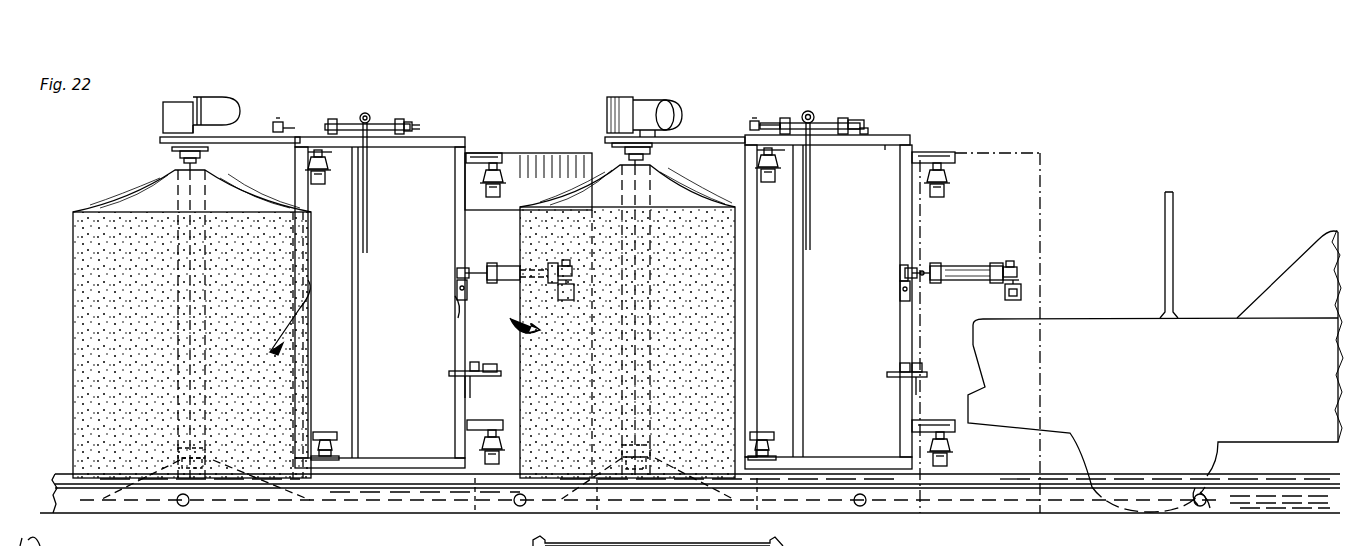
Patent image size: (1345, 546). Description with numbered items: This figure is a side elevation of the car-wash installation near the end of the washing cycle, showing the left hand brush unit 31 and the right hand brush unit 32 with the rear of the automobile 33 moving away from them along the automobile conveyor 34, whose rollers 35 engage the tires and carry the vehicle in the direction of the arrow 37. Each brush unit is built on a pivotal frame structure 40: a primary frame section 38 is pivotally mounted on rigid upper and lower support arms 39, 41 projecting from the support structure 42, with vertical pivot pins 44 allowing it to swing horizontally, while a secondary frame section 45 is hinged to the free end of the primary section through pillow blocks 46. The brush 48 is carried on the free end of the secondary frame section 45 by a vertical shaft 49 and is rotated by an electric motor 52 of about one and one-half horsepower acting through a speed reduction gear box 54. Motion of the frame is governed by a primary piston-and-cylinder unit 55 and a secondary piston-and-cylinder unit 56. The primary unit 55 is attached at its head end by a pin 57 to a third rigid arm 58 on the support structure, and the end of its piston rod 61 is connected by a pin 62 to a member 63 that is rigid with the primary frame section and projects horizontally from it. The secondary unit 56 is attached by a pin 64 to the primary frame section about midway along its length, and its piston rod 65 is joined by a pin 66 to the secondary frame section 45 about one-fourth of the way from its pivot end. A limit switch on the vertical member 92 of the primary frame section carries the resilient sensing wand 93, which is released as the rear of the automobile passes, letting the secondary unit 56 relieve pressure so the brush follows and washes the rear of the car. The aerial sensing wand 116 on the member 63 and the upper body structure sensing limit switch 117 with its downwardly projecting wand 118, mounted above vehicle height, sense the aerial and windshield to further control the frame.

The left hand brush unit 31 is at (799, 90).
The right hand brush unit 32 is at (192, 317).
The automobile 33 is at (1225, 365).
The automobile conveyor 34 is at (1290, 505).
The rollers 35 is at (1208, 508).
The arrow 37 is at (1245, 382).
The primary frame section 38 is at (855, 146).
The upper support arm 39 is at (952, 193).
The pivotal frame structure 40 is at (441, 120).
The lower support arm 41 is at (984, 455).
The support structure 42 is at (1040, 235).
The vertical pivot pins 44 is at (735, 293).
The secondary frame section 45 is at (696, 147).
The pillow blocks 46 is at (82, 212).
The brush 48 is at (545, 210).
The vertical shaft 49 is at (200, 160).
The electric motor 52 is at (222, 105).
The speed reduction gear box 54 is at (622, 100).
The primary piston-and-cylinder unit 55 is at (500, 264).
The secondary piston-and-cylinder unit 56 is at (352, 122).
The pin 57 is at (1020, 270).
The third rigid arm 58 is at (1022, 293).
The piston rod 61 is at (933, 263).
The pin 62 is at (900, 268).
The member 63 is at (457, 302).
The pin 64 is at (863, 128).
The piston rod 65 is at (766, 122).
The pin 66 is at (753, 122).
The vertical member 92 is at (902, 330).
The sensing wand 93 is at (475, 364).
The aerial sensing wand 116 is at (457, 288).
The upper body structure sensing limit switch 117 is at (368, 112).
The wand 118 is at (368, 240).